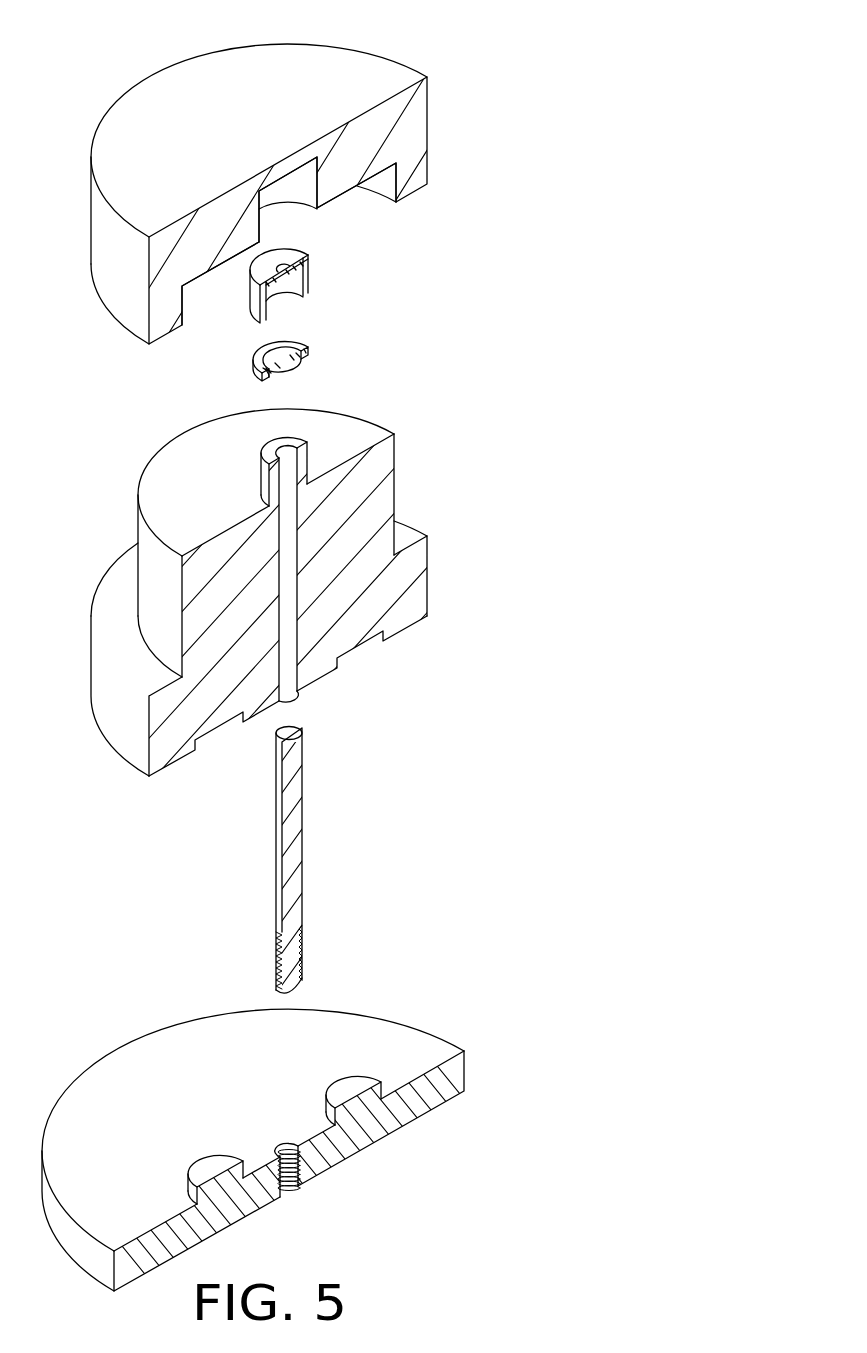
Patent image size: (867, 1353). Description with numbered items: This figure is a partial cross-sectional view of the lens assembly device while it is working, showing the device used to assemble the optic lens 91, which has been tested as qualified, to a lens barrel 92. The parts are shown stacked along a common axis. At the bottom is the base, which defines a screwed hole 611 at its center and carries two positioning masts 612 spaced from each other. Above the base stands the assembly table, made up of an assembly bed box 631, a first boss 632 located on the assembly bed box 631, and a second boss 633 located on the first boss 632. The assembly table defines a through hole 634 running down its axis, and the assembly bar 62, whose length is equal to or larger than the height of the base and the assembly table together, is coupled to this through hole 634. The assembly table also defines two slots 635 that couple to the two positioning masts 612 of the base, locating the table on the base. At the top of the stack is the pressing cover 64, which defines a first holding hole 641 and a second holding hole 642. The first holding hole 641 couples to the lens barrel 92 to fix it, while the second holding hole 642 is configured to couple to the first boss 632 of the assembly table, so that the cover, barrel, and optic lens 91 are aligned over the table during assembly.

The pressing cover 64 is at (337, 62).
The first holding hole 641 is at (300, 193).
The second holding hole 642 is at (382, 182).
The lens barrel 92 is at (313, 262).
The optic lens 91 is at (307, 362).
The assembly bed box 631 is at (410, 570).
The first boss 632 is at (357, 502).
The second boss 633 is at (313, 452).
The through hole 634 is at (282, 457).
The slots 635 is at (362, 652).
The assembly bar 62 is at (293, 820).
The screwed hole 611 is at (287, 1180).
The positioning masts 612 is at (360, 1088).